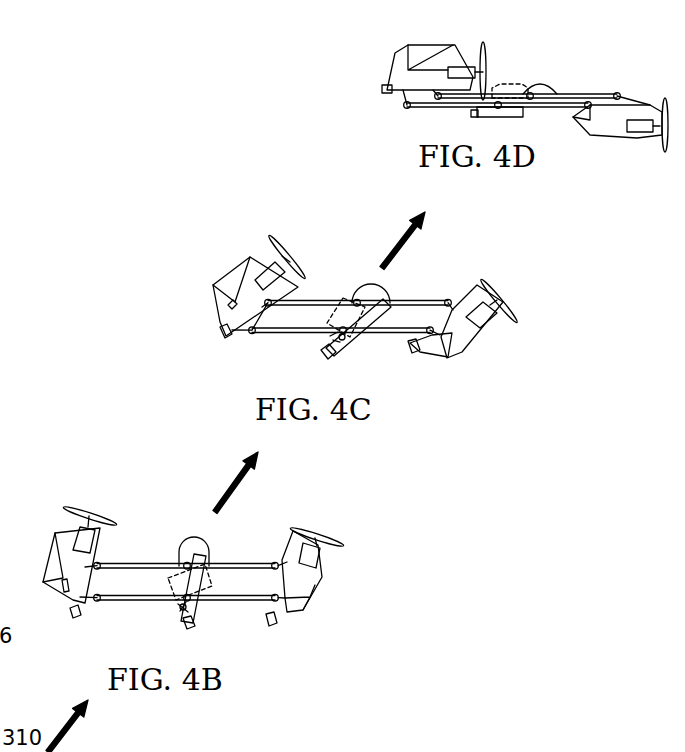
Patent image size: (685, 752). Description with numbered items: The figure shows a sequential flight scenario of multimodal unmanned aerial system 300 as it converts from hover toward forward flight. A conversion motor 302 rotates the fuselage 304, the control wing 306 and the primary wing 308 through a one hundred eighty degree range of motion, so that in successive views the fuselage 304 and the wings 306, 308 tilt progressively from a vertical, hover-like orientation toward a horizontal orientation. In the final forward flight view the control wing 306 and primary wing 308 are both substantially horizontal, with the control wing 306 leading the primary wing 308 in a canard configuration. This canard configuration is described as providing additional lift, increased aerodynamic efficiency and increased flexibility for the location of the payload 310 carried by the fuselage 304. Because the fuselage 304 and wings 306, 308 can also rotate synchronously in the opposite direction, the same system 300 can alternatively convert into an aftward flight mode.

In FIG. 4B, the multimodal unmanned aerial system 300 is at (113, 474).
In FIG. 4C, the multimodal unmanned aerial system 300 is at (293, 216).
In FIG. 4D, the multimodal unmanned aerial system 300 is at (601, 67).
In FIG. 4B, the conversion motor 302 is at (178, 610).
In FIG. 4C, the conversion motor 302 is at (323, 342).
In FIG. 4B, the fuselage 304 is at (170, 572).
In FIG. 4C, the fuselage 304 is at (326, 312).
In FIG. 4D, the fuselage 304 is at (500, 82).
In FIG. 4B, the control wing 306 is at (316, 590).
In FIG. 4C, the control wing 306 is at (467, 333).
In FIG. 4D, the control wing 306 is at (617, 138).
In FIG. 4B, the primary wing 308 is at (60, 533).
In FIG. 4C, the primary wing 308 is at (228, 272).
In FIG. 4D, the primary wing 308 is at (403, 60).
In FIG. 4B, the payload 310 is at (212, 549).
In FIG. 4C, the payload 310 is at (388, 298).
In FIG. 4D, the payload 310 is at (553, 87).